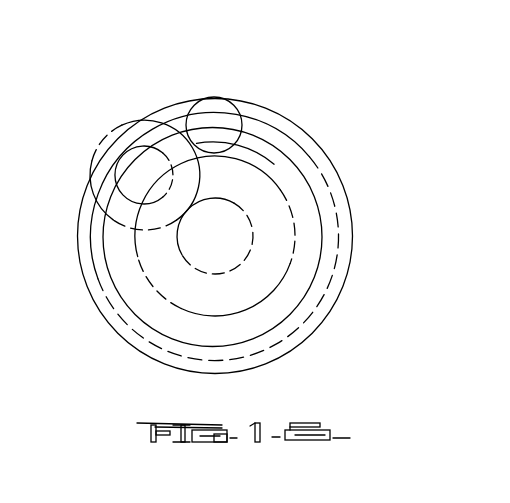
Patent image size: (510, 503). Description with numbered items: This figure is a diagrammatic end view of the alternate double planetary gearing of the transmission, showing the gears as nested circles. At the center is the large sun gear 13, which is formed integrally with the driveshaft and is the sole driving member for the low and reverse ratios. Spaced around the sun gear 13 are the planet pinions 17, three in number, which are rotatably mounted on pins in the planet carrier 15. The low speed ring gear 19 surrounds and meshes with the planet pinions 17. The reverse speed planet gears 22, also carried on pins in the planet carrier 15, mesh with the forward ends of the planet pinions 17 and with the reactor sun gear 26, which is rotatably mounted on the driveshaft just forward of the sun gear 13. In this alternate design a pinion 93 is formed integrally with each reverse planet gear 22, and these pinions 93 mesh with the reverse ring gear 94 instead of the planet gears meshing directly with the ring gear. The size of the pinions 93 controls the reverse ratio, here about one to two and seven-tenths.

The sun gear 13 is at (276, 180).
The planet carrier 15 is at (272, 136).
The planet pinions 17 is at (254, 103).
The low speed ring gear 19 is at (174, 97).
The reverse speed planet gears 22 is at (116, 127).
The reactor sun gear 26 is at (252, 247).
The pinion 93 is at (127, 202).
The reverse ring gear 94 is at (92, 255).